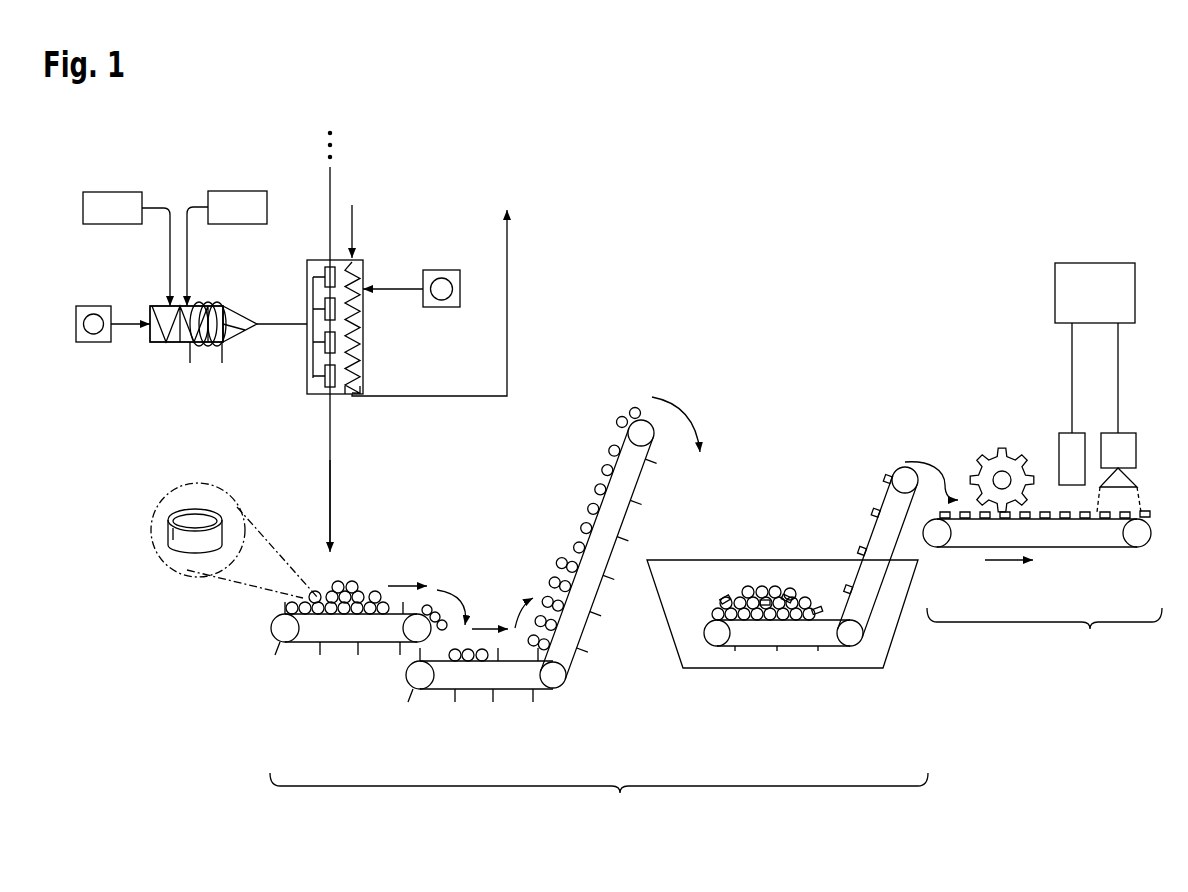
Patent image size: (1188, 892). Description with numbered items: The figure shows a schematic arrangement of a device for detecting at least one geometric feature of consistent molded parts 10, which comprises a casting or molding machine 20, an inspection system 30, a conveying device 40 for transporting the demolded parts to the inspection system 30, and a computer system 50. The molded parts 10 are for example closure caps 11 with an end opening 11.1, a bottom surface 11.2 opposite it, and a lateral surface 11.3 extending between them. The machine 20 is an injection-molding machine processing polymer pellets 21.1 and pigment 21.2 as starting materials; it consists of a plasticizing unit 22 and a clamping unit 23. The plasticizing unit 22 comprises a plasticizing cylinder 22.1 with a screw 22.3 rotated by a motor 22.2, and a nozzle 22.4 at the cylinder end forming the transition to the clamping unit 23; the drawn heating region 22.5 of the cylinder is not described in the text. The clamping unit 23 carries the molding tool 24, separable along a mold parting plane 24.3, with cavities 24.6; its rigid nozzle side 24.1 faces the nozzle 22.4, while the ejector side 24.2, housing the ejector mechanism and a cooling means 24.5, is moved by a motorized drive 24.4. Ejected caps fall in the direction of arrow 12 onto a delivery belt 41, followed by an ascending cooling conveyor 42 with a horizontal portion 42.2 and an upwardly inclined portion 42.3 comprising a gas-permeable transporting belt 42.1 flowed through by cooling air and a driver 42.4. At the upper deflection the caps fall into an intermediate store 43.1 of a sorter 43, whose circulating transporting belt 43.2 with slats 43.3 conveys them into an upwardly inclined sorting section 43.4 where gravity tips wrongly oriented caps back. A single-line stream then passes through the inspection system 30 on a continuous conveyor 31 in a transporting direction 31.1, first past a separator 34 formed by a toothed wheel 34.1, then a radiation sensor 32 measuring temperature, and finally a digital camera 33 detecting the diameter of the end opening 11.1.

The molded parts 10 is at (362, 581).
The closure caps 11 is at (187, 566).
The end opening 11.1 is at (183, 517).
The bottom surface 11.2 is at (185, 553).
The lateral surface 11.3 is at (178, 538).
The arrow 12 is at (333, 497).
The casting or molding machine 20 is at (247, 170).
The polymer pellets 21.1 is at (227, 248).
The pigment 21.2 is at (126, 249).
The plasticizing unit 22 is at (140, 349).
The plasticizing cylinder 22.1 is at (155, 343).
The motor 22.2 is at (92, 305).
The screw 22.3 is at (160, 305).
The nozzle 22.4 is at (257, 313).
The heating 22.5 is at (223, 353).
The clamping unit 23 is at (372, 357).
The molding tool 24 is at (363, 267).
The nozzle side 24.1 is at (315, 263).
The ejector side 24.2 is at (368, 397).
The mold parting plane 24.3 is at (331, 182).
The motorized drive 24.4 is at (437, 270).
The cooling means 24.5 is at (360, 328).
The cavities 24.6 is at (313, 397).
The inspection system 30 is at (1044, 635).
The continuous conveyor 31 is at (1113, 541).
The transporting direction 31.1 is at (1000, 562).
The radiation sensor 32 is at (1059, 442).
The digital camera 33 is at (1136, 442).
The separator 34 is at (950, 450).
The toothed wheel 34.1 is at (982, 453).
The conveying device 40 is at (599, 800).
The delivery belt 41 is at (322, 661).
The ascending cooling conveyor 42 is at (582, 700).
The gas-permeable transporting belt 42.1 is at (587, 623).
The horizontal portion 42.2 is at (472, 678).
The upwardly inclined portion 42.3 is at (592, 553).
The driver 42.4 is at (568, 678).
The sorter 43 is at (915, 630).
The intermediate store 43.1 is at (737, 558).
The circulating transporting belt 43.2 is at (873, 630).
The slats 43.3 is at (820, 648).
The sorting section 43.4 is at (887, 498).
The computer system 50 is at (1055, 293).